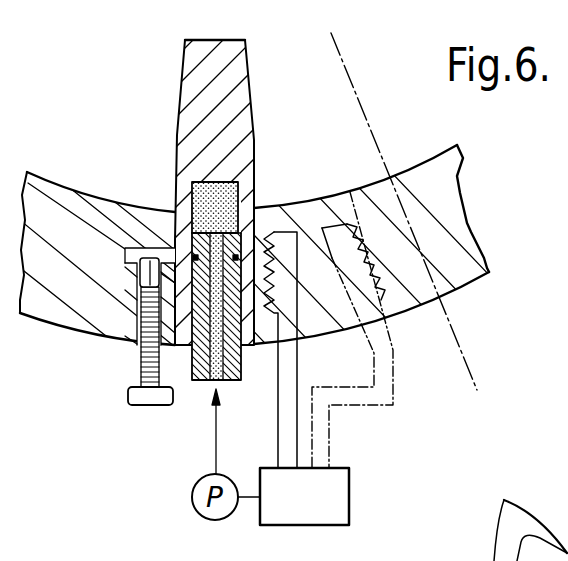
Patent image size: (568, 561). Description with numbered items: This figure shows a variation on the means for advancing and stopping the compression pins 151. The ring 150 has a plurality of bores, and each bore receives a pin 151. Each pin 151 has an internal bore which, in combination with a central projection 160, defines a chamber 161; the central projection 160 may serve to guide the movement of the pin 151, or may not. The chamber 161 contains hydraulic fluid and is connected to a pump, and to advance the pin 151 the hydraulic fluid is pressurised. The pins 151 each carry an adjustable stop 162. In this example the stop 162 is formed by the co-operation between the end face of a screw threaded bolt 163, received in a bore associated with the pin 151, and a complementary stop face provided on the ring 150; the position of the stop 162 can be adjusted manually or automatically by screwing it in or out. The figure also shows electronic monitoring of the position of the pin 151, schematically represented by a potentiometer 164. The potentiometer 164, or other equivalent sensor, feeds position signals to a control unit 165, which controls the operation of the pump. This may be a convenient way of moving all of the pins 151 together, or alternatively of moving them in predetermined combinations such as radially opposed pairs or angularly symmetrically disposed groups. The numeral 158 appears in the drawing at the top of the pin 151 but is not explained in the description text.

The ring 150 is at (67, 213).
The compression pin 151 is at (215, 100).
The pin top surface 158 is at (200, 40).
The central projection 160 is at (192, 362).
The chamber 161 is at (214, 206).
The adjustable stop 162 is at (116, 260).
The screw threaded bolt 163 is at (140, 364).
The potentiometer 164 is at (322, 228).
The control unit 165 is at (328, 507).